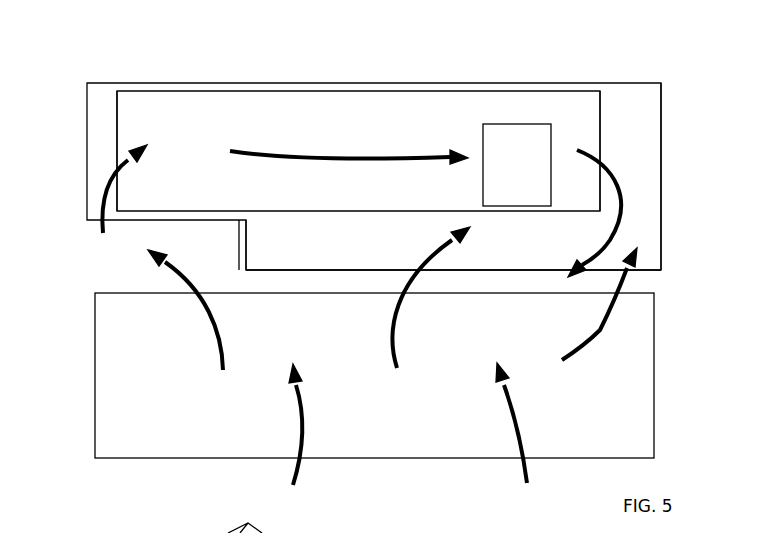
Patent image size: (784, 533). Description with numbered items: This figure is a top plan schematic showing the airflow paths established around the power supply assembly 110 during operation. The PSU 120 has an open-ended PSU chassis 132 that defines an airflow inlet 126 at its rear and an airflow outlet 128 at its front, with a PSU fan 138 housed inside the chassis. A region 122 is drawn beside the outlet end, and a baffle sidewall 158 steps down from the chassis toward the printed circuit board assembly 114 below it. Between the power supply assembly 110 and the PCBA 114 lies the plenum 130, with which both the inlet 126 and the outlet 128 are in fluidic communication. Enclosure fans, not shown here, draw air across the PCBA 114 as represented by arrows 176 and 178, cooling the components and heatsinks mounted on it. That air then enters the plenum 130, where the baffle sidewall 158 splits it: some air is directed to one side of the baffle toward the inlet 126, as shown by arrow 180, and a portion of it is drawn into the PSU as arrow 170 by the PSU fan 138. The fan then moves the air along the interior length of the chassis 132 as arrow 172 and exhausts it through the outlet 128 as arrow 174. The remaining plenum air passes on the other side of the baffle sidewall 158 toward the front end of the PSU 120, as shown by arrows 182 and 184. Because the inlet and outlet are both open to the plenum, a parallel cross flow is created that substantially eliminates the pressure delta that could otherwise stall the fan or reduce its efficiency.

The power supply assembly 110 is at (678, 27).
The printed circuit board assembly 114 is at (103, 380).
The PSU 120 is at (279, 92).
The exhaust chamber 122 is at (637, 155).
The airflow inlet 126 is at (117, 108).
The airflow outlet 128 is at (603, 126).
The plenum 130 is at (700, 266).
The PSU chassis 132 is at (451, 98).
The PSU fan 138 is at (517, 124).
The baffle sidewall 158 is at (248, 236).
The arrow 170 is at (87, 178).
The arrow 172 is at (343, 155).
The arrow 174 is at (625, 190).
The arrow 176 is at (303, 473).
The arrow 178 is at (527, 468).
The arrow 180 is at (213, 347).
The arrow 182 is at (393, 320).
The arrow 184 is at (592, 337).